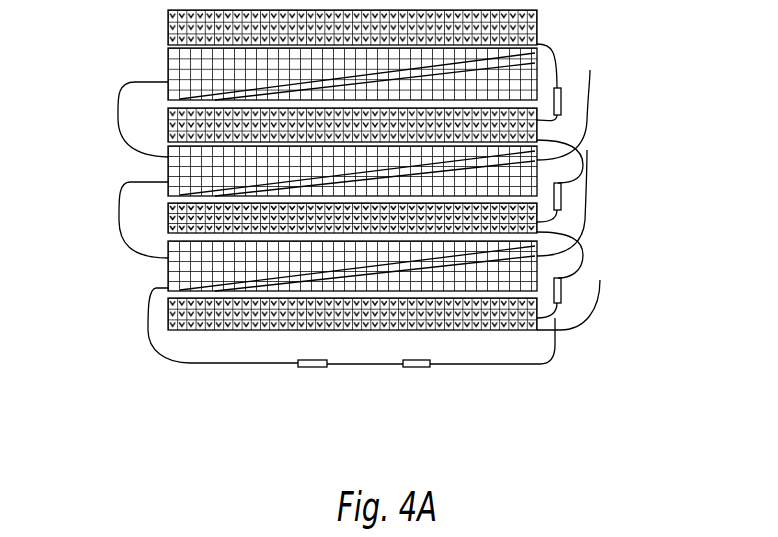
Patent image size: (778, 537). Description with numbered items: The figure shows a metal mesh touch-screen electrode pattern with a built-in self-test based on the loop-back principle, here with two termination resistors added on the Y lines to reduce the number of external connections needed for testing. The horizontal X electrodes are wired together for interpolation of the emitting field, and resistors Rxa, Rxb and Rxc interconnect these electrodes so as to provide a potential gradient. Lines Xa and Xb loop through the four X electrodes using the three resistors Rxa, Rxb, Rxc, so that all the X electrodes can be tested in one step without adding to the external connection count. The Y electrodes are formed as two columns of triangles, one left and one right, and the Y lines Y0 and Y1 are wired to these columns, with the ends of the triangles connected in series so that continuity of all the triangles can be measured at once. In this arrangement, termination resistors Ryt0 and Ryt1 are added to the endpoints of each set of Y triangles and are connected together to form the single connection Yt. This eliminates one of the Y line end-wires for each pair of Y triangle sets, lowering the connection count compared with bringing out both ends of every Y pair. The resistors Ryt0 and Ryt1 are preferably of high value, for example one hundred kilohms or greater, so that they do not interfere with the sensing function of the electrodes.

The X line Xa is at (537, 14).
The X line Xb is at (600, 280).
The Y line Y0 is at (168, 60).
The Y line Y1 is at (537, 70).
The resistor Rxc is at (567, 82).
The resistor Rxb is at (570, 181).
The resistor Rxa is at (570, 275).
The termination resistor Ryt0 is at (318, 386).
The termination resistor Ryt1 is at (422, 386).
The connection Yt is at (368, 366).